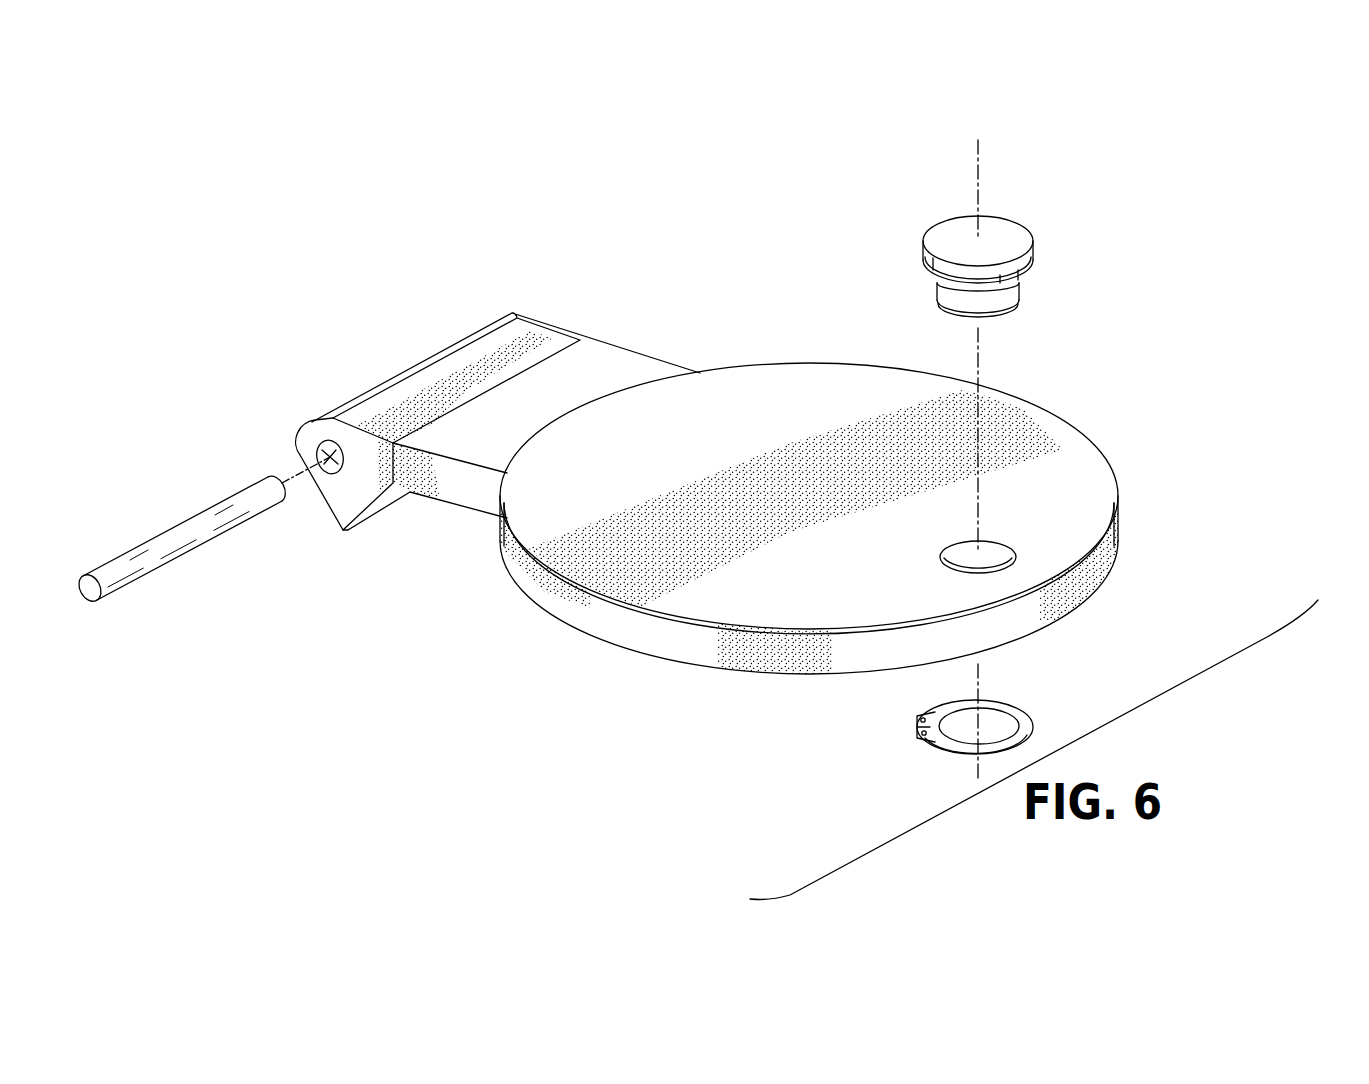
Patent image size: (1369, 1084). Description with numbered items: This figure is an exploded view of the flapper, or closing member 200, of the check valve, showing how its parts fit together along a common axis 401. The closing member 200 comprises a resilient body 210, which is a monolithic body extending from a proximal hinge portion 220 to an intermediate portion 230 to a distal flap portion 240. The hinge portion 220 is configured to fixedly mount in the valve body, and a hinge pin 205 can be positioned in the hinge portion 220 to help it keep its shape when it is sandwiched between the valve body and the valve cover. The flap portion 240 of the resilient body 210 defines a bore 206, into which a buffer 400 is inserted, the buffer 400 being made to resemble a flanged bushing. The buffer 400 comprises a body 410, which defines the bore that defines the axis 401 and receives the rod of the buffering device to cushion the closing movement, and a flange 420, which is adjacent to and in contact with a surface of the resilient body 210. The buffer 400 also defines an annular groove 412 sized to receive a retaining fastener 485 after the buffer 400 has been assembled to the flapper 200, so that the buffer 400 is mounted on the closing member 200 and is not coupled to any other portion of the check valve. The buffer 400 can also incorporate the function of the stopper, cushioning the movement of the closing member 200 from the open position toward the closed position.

The closing member 200 is at (1069, 160).
The hinge pin 205 is at (177, 527).
The bore 206 is at (997, 560).
The resilient body 210 is at (1057, 450).
The hinge portion 220 is at (337, 495).
The intermediate portion 230 is at (450, 483).
The flap portion 240 is at (820, 660).
The buffer 400 is at (981, 264).
The axis 401 is at (973, 162).
The body 410 is at (962, 319).
The annular groove 412 is at (952, 314).
The flange 420 is at (1011, 234).
The retaining fastener 485 is at (913, 734).